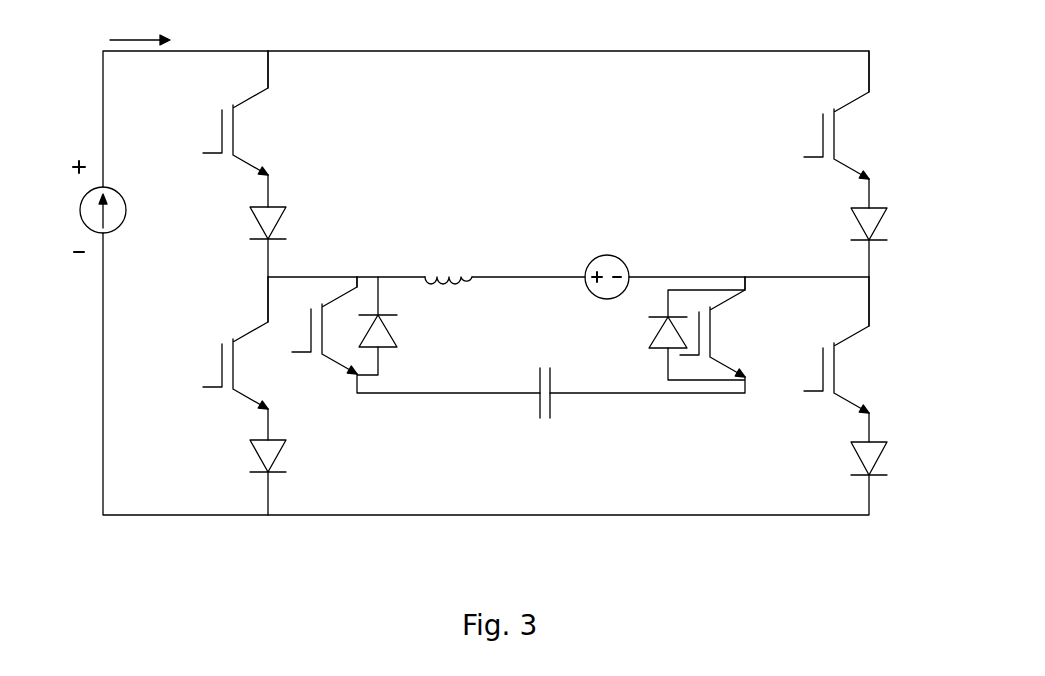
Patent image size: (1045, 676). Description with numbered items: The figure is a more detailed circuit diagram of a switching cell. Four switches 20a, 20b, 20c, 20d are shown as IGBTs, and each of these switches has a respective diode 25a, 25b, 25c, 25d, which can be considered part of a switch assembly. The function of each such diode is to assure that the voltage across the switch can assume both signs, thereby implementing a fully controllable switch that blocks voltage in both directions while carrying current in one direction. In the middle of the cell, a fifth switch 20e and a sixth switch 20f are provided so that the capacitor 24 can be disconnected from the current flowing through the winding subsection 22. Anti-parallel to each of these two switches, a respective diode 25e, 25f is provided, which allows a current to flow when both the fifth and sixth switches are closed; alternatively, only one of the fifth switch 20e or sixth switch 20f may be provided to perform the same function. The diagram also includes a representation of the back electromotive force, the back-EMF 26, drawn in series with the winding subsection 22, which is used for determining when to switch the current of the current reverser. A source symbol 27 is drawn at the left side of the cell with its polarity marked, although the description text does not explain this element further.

The switch 20a is at (245, 131).
The switch 20b is at (255, 367).
The switch 20c is at (842, 130).
The switch 20d is at (848, 367).
The fifth switch 20e is at (308, 329).
The sixth switch 20f is at (720, 330).
The diode 25a is at (250, 213).
The diode 25b is at (258, 449).
The diode 25c is at (928, 221).
The diode 25d is at (925, 455).
The diode 25e is at (398, 328).
The diode 25f is at (650, 323).
The winding subsection 22 is at (436, 273).
The capacitor 24 is at (538, 406).
The back-EMF 26 is at (625, 253).
The current source 27 is at (81, 211).